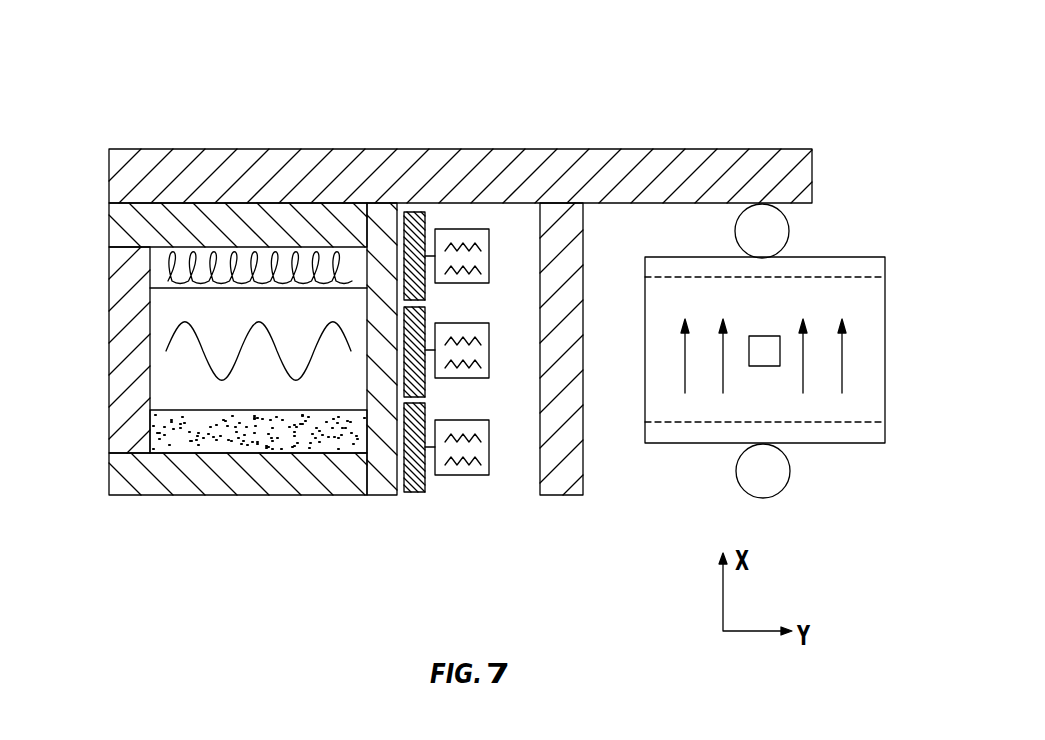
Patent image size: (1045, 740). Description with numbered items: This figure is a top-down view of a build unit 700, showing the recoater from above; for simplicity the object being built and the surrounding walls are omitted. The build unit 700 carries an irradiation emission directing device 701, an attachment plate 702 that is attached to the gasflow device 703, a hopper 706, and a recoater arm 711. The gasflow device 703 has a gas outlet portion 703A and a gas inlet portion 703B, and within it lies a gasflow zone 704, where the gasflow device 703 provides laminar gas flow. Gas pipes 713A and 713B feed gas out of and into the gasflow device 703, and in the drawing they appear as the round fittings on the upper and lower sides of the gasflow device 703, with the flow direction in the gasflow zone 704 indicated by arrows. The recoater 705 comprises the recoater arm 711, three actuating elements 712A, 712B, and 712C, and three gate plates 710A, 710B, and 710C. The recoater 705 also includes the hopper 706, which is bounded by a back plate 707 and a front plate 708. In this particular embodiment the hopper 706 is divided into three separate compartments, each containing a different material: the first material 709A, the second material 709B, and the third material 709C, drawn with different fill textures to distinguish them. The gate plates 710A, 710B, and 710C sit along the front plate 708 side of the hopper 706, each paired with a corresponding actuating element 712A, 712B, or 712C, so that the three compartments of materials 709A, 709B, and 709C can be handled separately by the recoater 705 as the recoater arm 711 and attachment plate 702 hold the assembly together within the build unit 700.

The build unit 700 is at (876, 153).
The irradiation emission directing device 701 is at (764, 336).
The attachment plate 702 is at (330, 149).
The gasflow device 703 is at (887, 398).
The gas outlet portion 703A is at (863, 435).
The gas inlet portion 703B is at (875, 268).
The gasflow zone 704 is at (705, 382).
The recoater 705 is at (607, 90).
The hopper 706 is at (378, 507).
The back plate 707 is at (108, 322).
The front plate 708 is at (392, 496).
The first material 709A is at (157, 278).
The second material 709B is at (165, 342).
The third material 709C is at (163, 437).
The gate plate 710A is at (415, 493).
The gate plate 710B is at (425, 318).
The gate plate 710C is at (415, 212).
The recoater arm 711 is at (583, 486).
The actuating element 712A is at (457, 475).
The actuating element 712B is at (457, 378).
The actuating element 712C is at (465, 229).
The gas pipe 713A is at (790, 232).
The gas pipe 713B is at (790, 471).